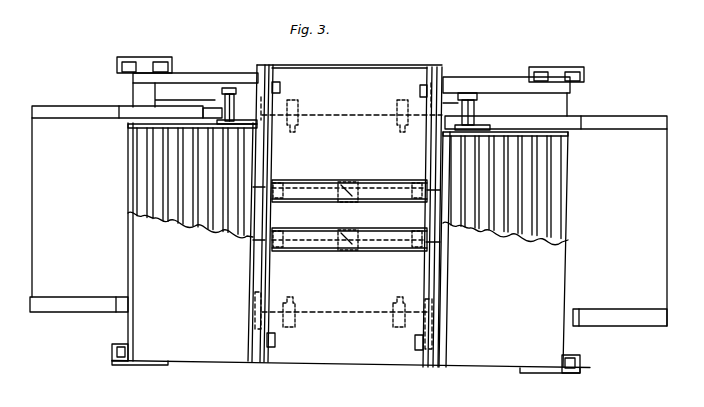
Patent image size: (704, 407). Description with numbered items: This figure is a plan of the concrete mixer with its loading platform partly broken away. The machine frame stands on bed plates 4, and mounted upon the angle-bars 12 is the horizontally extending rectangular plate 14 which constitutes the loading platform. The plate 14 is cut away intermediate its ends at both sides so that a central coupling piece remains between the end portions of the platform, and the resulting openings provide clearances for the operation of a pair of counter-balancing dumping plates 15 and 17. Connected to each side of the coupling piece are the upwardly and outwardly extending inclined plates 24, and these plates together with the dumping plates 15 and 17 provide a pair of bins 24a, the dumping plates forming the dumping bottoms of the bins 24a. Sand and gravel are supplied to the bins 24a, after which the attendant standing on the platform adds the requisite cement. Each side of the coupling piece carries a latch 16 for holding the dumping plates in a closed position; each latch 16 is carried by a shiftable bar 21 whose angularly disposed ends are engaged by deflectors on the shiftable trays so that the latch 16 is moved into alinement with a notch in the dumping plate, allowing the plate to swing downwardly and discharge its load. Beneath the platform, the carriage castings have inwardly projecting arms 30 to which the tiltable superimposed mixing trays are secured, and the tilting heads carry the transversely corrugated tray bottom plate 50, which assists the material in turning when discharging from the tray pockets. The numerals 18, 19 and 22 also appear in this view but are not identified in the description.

The bed plate 4 is at (143, 62).
The angle-bar 12 is at (514, 82).
The plate 14 is at (348, 245).
The dumping plate 15 is at (346, 292).
The latch 16 is at (350, 178).
The dumping plate 17 is at (349, 110).
The vertical post 18 is at (262, 103).
The transverse rod 19 is at (352, 115).
The shiftable bar 21 is at (262, 277).
The rod bearing block 22 is at (297, 134).
The inclined plate 24 is at (364, 178).
The bin 24a is at (373, 203).
The inwardly projecting arm 30 is at (221, 102).
The tray bottom plate 50 is at (82, 120).